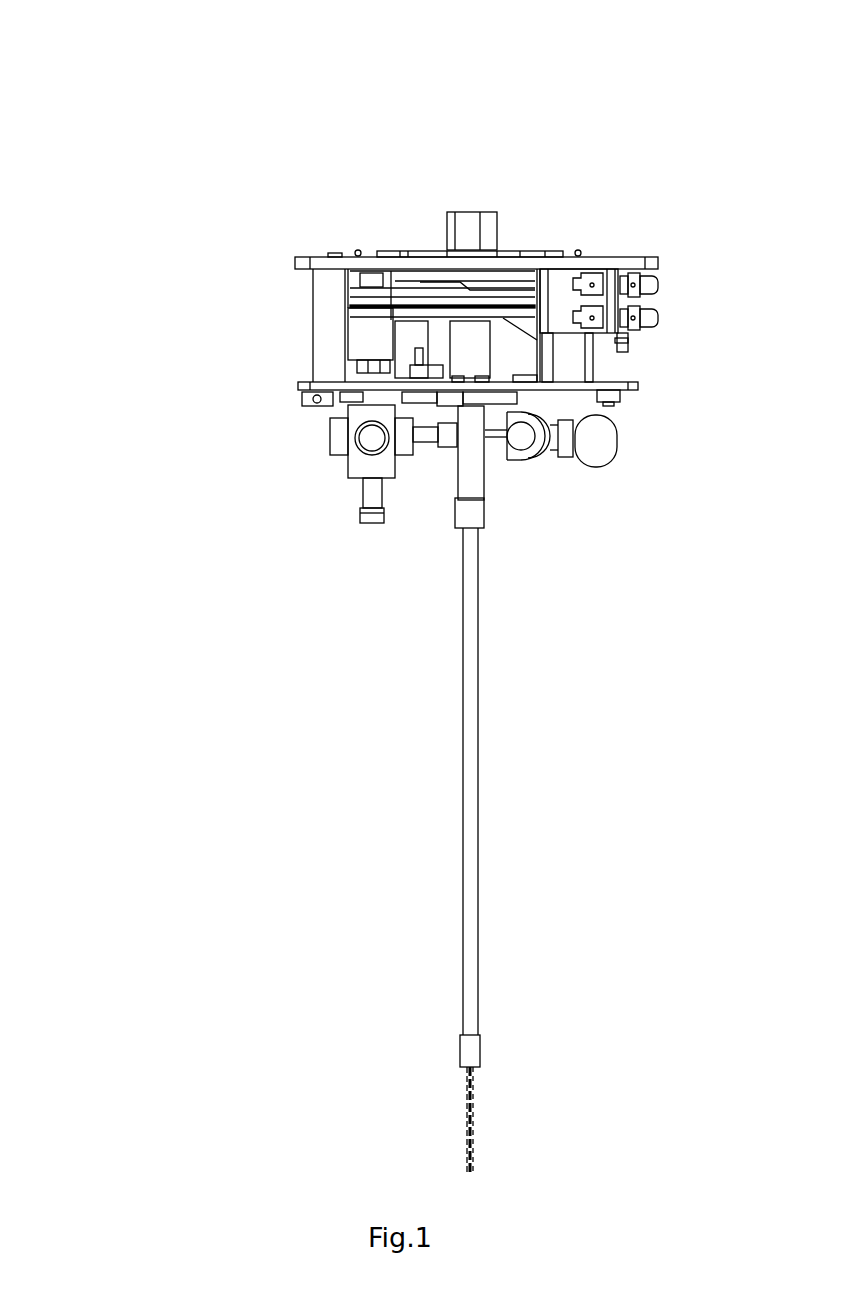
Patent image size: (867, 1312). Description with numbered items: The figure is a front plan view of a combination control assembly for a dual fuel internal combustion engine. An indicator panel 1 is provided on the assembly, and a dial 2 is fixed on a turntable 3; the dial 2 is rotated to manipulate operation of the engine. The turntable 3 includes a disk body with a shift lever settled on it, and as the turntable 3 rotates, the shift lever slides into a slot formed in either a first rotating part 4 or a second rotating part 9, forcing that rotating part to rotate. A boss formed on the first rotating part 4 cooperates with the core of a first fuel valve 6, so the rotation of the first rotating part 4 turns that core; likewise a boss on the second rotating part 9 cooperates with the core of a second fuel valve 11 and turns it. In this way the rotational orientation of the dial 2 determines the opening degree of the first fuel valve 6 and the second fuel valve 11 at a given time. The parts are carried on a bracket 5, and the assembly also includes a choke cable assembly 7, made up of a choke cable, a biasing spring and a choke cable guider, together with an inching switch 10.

The indicator panel 1 is at (355, 151).
The dial 2 is at (274, 141).
The turntable 3 is at (294, 268).
The first rotating part 4 is at (294, 233).
The bracket 5 is at (345, 308).
The first fuel valve 6 is at (254, 399).
The choke cable assembly 7 is at (268, 747).
The second rotating part 9 is at (647, 247).
The inching switch 10 is at (686, 274).
The second fuel valve 11 is at (618, 398).